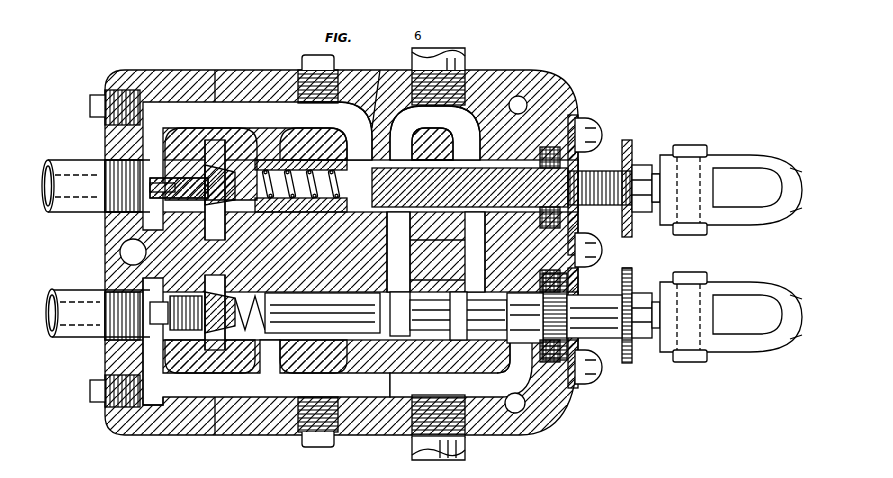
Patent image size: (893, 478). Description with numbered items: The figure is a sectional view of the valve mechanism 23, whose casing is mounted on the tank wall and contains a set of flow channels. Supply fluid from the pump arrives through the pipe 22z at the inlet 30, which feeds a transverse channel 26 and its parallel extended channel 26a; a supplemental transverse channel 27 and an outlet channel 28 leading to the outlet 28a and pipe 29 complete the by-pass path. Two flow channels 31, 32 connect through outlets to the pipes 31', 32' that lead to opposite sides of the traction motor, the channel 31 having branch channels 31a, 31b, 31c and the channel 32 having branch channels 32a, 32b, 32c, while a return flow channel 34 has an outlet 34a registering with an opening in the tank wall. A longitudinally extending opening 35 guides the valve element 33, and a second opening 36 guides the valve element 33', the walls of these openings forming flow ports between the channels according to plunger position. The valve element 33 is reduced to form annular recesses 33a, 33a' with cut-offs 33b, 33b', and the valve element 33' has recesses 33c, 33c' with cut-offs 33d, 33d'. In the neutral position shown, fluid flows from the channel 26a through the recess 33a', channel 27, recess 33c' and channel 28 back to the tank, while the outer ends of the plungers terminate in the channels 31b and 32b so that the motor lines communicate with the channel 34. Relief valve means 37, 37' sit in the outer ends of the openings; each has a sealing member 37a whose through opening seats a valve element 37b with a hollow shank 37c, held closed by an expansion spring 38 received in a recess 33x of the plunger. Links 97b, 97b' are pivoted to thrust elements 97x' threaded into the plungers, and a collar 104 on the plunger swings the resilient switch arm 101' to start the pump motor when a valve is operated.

The pipe 22z is at (460, 60).
The valve mechanism 23 is at (90, 258).
The transverse channel 26 is at (387, 246).
The extended channel 26a is at (437, 236).
The supplemental transverse channel 27 is at (455, 262).
The outlet channel 28 is at (535, 390).
The outlet 28a is at (415, 440).
The pipe 29 is at (466, 446).
The inlet 30 is at (478, 82).
The flow channel 31 is at (221, 70).
The pipe 31' is at (95, 169).
The branch channel 31a is at (145, 192).
The branch channel 31b is at (280, 128).
The branch channel 31c is at (379, 70).
The flow channel 32 is at (212, 429).
The pipe 32' is at (87, 310).
The branch channel 32a is at (148, 354).
The branch channel 32b is at (268, 345).
The branch channel 32c is at (362, 298).
The valve element 33 is at (516, 157).
The valve element 33' is at (619, 362).
The annular recess 33a is at (432, 144).
The annular recess 33a' is at (526, 174).
The cut-off 33b is at (435, 133).
The cut-off 33b' is at (500, 252).
The annular recess 33c is at (458, 341).
The annular recess 33c' is at (498, 357).
The cut-off 33d is at (398, 303).
The cut-off 33d' is at (551, 316).
The recess 33x is at (342, 128).
The return flow channel 34 is at (235, 292).
The outlet 34a is at (205, 248).
The longitudinally extending opening 35 is at (553, 118).
The longitudinally extending opening 36 is at (545, 318).
The relief valve means 37 is at (220, 190).
The relief valve means 37' is at (219, 312).
The sealing member 37a is at (160, 178).
The valve element 37b is at (238, 128).
The hollow shank 37c is at (165, 198).
The expansion spring 38 is at (362, 165).
The link 97b is at (731, 181).
The link 97b' is at (731, 326).
The thrust element 97x' is at (627, 251).
The switch arm 101' is at (651, 244).
The collar 104 is at (628, 268).